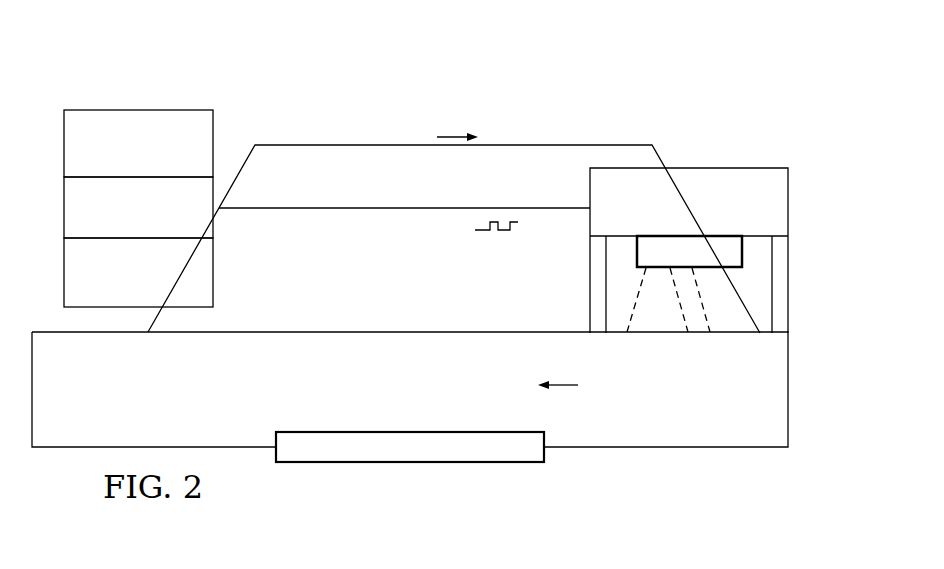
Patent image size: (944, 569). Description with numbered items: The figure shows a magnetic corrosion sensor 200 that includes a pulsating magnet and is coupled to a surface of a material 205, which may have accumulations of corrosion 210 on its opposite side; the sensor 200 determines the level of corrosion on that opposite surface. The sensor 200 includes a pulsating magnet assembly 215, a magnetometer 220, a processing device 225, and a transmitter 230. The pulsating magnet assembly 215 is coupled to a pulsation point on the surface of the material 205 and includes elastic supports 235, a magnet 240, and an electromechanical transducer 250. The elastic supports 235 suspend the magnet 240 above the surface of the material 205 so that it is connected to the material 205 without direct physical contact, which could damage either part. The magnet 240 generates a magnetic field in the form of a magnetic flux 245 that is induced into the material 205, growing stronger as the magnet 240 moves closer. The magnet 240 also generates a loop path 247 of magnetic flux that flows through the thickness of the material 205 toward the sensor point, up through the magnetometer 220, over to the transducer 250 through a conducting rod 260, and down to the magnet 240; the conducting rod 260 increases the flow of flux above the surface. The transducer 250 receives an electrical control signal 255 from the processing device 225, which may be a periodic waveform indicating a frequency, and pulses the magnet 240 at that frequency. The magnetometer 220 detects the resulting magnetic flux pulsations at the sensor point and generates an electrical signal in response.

The magnetic corrosion sensor 200 is at (646, 56).
The material 205 is at (390, 404).
The corrosion 210 is at (408, 455).
The pulsating magnet assembly 215 is at (750, 148).
The magnetometer 220 is at (118, 284).
The processing device 225 is at (118, 228).
The transmitter 230 is at (118, 157).
The elastic support 235 is at (602, 287).
The magnet 240 is at (722, 242).
The magnetic flux 245 is at (628, 342).
The loop path 247 is at (455, 135).
The electromechanical transducer 250 is at (690, 178).
The electrical control signal 255 is at (407, 208).
The conducting rod 260 is at (320, 145).